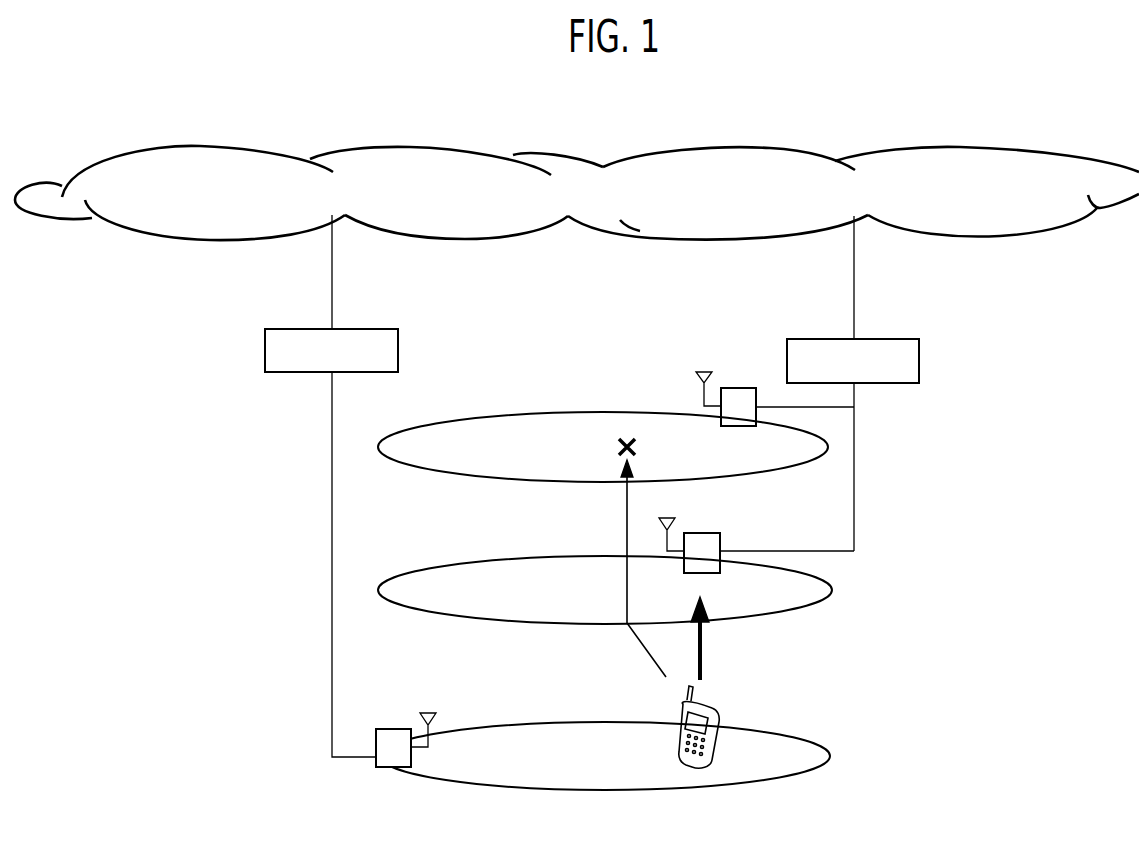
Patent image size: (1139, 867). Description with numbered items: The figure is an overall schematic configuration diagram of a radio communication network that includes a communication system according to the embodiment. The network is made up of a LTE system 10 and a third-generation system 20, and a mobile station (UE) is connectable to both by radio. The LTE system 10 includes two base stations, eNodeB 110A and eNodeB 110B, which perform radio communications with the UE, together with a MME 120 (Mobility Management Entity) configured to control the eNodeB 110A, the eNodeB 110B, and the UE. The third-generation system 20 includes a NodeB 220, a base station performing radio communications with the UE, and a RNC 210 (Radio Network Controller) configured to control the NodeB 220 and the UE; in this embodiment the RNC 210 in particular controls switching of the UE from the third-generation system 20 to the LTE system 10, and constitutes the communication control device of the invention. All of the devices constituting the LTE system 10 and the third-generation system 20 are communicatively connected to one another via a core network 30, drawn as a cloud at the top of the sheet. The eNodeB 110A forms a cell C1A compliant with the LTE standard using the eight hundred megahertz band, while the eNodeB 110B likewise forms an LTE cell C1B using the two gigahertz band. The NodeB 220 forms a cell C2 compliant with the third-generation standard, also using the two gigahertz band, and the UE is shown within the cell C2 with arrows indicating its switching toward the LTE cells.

The core network 30 is at (944, 148).
The LTE system 10 is at (829, 394).
The 3G system 20 is at (507, 502).
The MME 120 is at (919, 362).
The eNodeB 110A is at (741, 388).
The eNodeB 110B is at (705, 533).
The RNC 210 is at (398, 351).
The NodeB 220 is at (392, 729).
The cell C1A is at (598, 412).
The cell C1B is at (515, 557).
The cell C2 is at (555, 722).